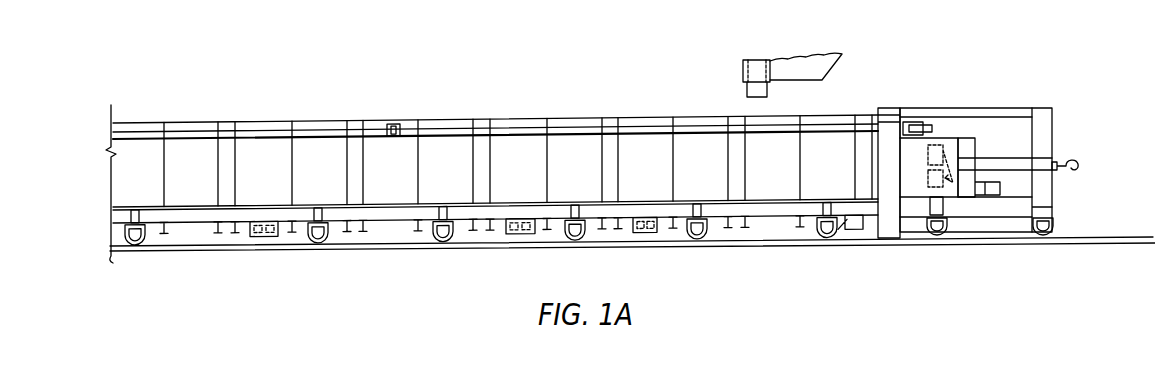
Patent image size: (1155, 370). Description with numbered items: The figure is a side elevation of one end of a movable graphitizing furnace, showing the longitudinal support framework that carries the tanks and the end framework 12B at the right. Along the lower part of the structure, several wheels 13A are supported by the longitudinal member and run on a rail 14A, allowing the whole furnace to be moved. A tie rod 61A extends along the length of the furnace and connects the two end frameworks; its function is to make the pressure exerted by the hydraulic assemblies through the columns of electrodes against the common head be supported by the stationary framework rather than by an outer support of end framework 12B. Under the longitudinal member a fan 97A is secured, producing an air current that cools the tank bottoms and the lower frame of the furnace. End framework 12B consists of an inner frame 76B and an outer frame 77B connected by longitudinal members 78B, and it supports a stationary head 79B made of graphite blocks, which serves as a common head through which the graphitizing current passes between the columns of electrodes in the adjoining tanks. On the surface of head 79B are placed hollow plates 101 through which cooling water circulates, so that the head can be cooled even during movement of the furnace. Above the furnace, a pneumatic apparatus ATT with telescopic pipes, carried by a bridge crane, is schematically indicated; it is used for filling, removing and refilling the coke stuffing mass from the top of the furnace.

The tie rod 61A is at (449, 132).
The fan 97A is at (262, 239).
The wheel 13A is at (443, 244).
The rail 14A is at (737, 242).
The pneumatic apparatus ATT is at (741, 74).
The inner frame 76B is at (890, 160).
The end framework 12B is at (1020, 176).
The longitudinal member 78B is at (1010, 112).
The outer frame 77B is at (1042, 129).
The stationary head 79B is at (917, 182).
The hollow plate 101 is at (958, 198).